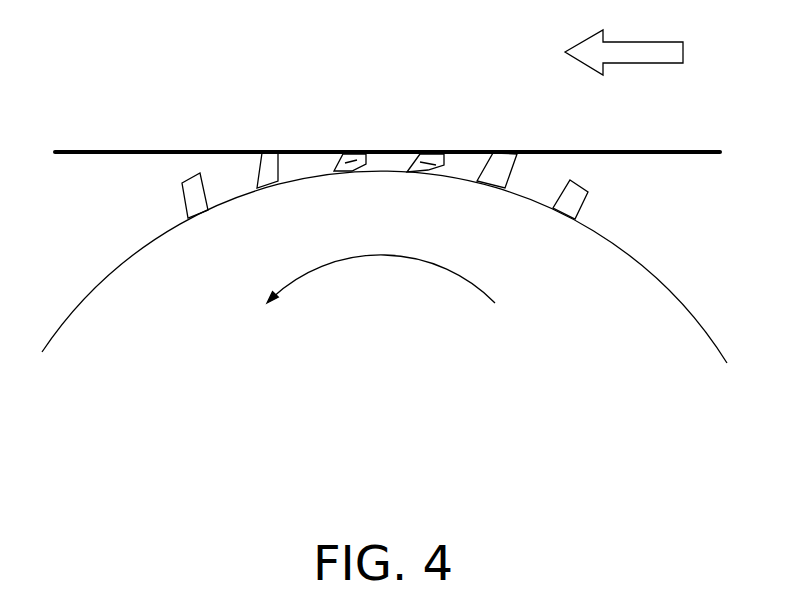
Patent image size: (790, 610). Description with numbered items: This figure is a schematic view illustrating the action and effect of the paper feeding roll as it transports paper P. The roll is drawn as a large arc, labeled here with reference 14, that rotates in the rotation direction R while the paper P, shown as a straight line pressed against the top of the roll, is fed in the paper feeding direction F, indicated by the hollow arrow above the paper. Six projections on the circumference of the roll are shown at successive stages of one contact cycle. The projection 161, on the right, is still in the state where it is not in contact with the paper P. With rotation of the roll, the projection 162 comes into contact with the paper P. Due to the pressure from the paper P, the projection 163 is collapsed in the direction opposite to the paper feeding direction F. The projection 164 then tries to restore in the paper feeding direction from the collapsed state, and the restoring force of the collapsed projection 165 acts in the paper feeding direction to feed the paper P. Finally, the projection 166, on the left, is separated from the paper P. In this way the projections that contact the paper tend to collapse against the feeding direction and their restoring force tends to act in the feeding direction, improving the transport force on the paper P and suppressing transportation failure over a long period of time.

The drum 14 is at (673, 318).
The paper P is at (695, 155).
The paper feeding direction F is at (636, 52).
The rotation direction R is at (381, 279).
The projection 161 is at (577, 202).
The projection 162 is at (503, 170).
The projection 163 is at (433, 172).
The projection 164 is at (338, 175).
The projection 165 is at (263, 172).
The projection 166 is at (187, 206).